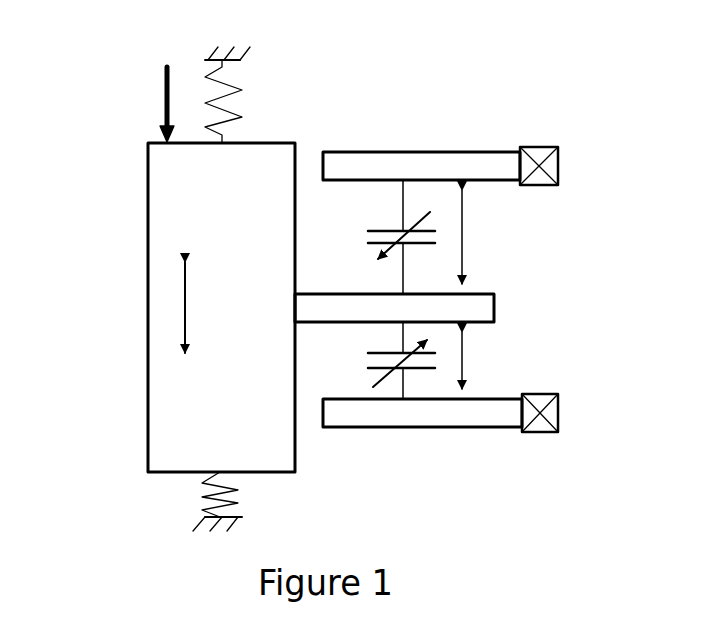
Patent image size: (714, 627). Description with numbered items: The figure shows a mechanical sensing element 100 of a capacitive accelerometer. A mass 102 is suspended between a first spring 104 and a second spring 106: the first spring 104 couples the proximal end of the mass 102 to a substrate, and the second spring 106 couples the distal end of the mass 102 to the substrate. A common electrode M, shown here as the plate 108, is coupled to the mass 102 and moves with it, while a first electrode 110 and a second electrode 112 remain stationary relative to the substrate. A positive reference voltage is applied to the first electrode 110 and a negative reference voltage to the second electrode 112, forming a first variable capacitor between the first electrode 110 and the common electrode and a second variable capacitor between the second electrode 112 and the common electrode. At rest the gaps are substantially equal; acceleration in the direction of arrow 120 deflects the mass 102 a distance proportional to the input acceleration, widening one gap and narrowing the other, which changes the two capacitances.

The mechanical sensing element 100 is at (343, 283).
The mass 102 is at (148, 262).
The first spring 104 is at (253, 501).
The second spring 106 is at (246, 103).
The movable electrode plate M 108 is at (495, 295).
The first electrode 110 is at (468, 158).
The second electrode 112 is at (440, 422).
The arrow 120 is at (139, 104).